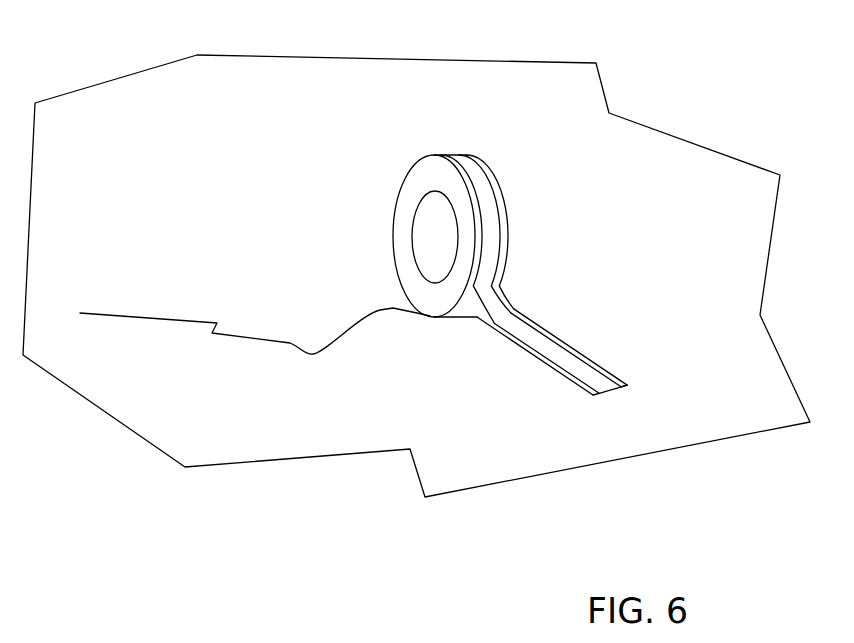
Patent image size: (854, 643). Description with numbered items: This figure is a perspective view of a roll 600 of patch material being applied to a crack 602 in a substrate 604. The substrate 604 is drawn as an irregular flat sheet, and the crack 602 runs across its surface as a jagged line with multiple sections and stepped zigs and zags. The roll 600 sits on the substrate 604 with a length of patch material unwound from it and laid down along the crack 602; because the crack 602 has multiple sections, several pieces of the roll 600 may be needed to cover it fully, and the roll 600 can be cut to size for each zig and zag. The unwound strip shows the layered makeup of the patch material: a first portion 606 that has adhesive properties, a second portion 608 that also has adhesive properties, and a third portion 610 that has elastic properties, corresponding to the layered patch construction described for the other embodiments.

The roll 600 is at (464, 155).
The crack 602 is at (120, 315).
The substrate 604 is at (627, 308).
The first portion 606 is at (523, 351).
The second portion 608 is at (627, 387).
The third portion 610 is at (612, 392).